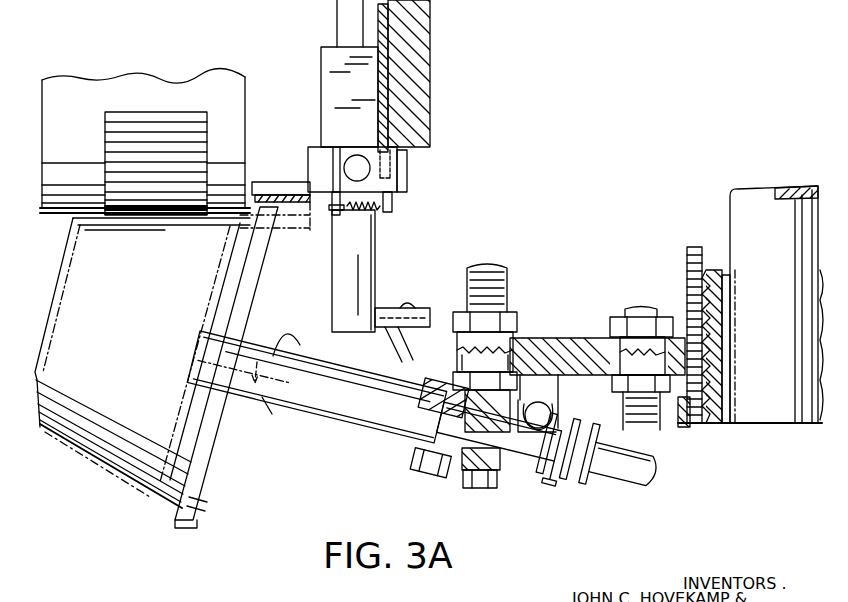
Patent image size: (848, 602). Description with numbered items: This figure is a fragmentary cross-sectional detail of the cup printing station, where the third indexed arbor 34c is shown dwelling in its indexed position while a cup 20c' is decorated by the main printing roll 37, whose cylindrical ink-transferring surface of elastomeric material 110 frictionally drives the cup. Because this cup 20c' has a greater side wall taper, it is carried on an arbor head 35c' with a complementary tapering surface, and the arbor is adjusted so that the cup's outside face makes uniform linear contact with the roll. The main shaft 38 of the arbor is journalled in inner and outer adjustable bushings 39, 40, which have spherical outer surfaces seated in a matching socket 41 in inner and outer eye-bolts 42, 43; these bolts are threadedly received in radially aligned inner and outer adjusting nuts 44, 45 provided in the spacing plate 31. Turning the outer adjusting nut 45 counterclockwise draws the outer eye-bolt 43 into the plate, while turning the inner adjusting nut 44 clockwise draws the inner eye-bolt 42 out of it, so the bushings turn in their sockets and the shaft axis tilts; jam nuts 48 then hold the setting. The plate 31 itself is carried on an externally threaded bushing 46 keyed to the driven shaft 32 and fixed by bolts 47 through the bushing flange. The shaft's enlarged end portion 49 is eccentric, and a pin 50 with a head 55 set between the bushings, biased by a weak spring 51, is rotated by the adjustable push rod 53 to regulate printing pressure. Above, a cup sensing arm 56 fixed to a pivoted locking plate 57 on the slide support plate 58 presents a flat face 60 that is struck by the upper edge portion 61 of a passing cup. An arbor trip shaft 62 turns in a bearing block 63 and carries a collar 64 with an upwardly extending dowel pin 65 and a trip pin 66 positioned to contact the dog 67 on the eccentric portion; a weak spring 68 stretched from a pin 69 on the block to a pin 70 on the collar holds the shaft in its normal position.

The cup 20c' is at (137, 385).
The spacing plate 31 is at (556, 338).
The driven shaft 32 is at (730, 218).
The indexed arbor 34c is at (342, 428).
The arbor head 35c' is at (242, 363).
The main printing roll 37 is at (245, 112).
The main shaft 38 is at (556, 478).
The inner adjustable bushing 39 is at (668, 468).
The outer adjustable bushing 40 is at (462, 465).
The socket 41 is at (478, 480).
The inner eye-bolt 42 is at (660, 445).
The outer eye-bolt 43 is at (462, 385).
The inner adjusting nut 44 is at (616, 392).
The outer adjusting nut 45 is at (458, 360).
The externally threaded bushing 46 is at (713, 420).
The bolts 47 is at (688, 296).
The jam nuts 48 is at (508, 330).
The enlarged end portion 49 is at (268, 402).
The pin 50 is at (552, 428).
The weak spring 51 is at (574, 490).
The adjustable push rod 53 is at (532, 402).
The head 55 is at (552, 405).
The cup sensing arm 56 is at (296, 183).
The locking plate 57 is at (378, 20).
The slide support plate 58 is at (432, 40).
The flat face 60 is at (275, 216).
The upper edge portion 61 is at (197, 526).
The arbor trip shaft 62 is at (378, 248).
The bearing block 63 is at (322, 63).
The collar 64 is at (398, 190).
The dowel pin 65 is at (357, 156).
The trip pin 66 is at (440, 296).
The dog 67 is at (382, 352).
The weak spring 68 is at (340, 218).
The pin 69 is at (333, 164).
The pin 70 is at (393, 205).
The elastomeric material 110 is at (110, 153).